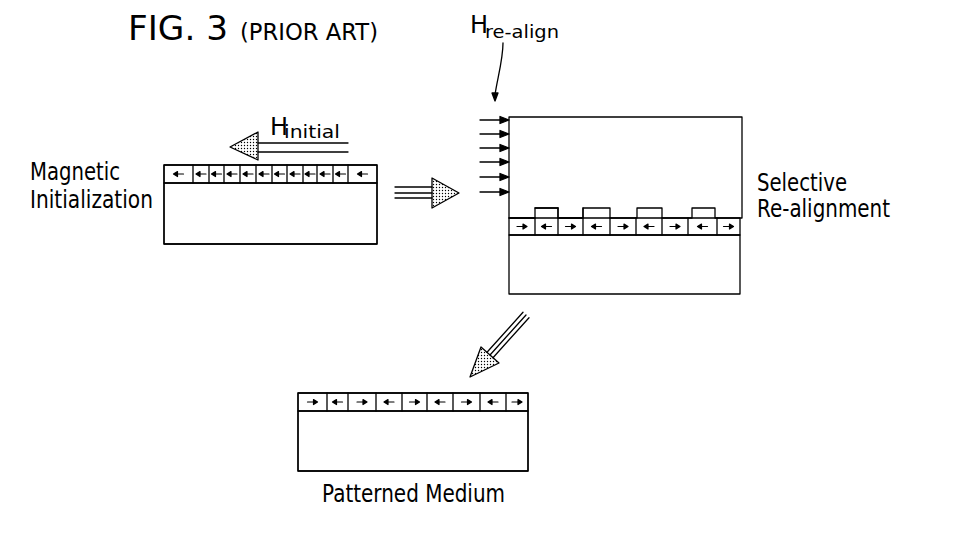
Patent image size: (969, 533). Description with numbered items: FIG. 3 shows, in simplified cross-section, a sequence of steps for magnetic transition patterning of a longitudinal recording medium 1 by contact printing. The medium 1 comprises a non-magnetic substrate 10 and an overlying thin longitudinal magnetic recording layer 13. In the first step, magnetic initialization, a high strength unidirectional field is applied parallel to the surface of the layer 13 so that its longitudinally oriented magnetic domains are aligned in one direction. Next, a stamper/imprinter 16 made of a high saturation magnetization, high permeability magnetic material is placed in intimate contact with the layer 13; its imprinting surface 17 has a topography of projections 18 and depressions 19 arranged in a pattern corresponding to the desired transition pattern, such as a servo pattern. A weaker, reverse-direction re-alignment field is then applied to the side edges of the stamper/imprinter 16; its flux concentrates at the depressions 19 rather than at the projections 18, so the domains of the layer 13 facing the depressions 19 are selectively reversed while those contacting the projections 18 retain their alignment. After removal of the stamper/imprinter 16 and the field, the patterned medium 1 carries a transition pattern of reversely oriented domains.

The longitudinal recording medium 1 is at (155, 225).
The non-magnetic substrate 10 is at (283, 220).
The magnetic recording layer 13 is at (368, 165).
The stamper/imprinter 16 is at (746, 128).
The imprinting surface 17 is at (496, 210).
The projections 18 is at (547, 218).
The depressions 19 is at (577, 208).